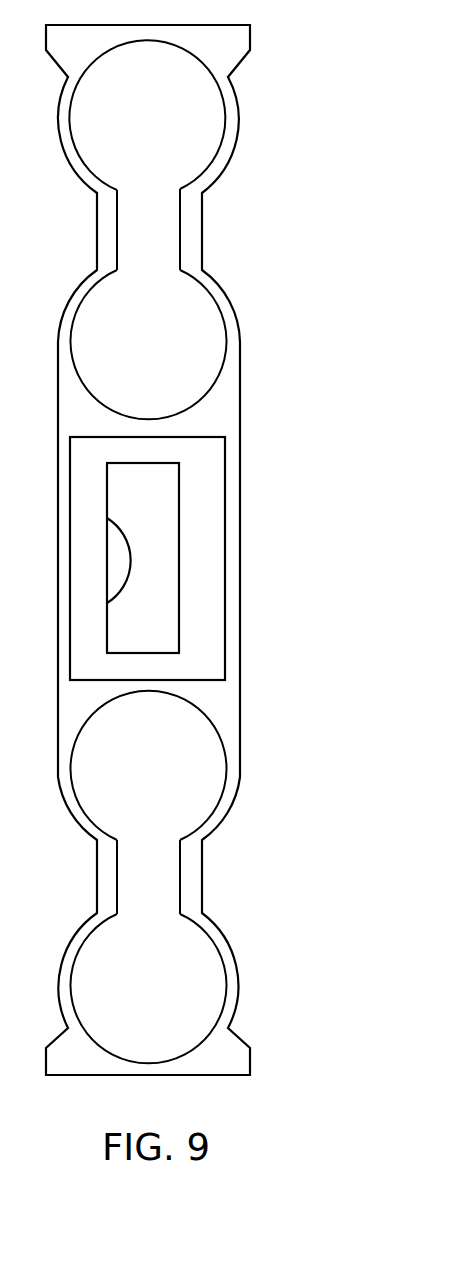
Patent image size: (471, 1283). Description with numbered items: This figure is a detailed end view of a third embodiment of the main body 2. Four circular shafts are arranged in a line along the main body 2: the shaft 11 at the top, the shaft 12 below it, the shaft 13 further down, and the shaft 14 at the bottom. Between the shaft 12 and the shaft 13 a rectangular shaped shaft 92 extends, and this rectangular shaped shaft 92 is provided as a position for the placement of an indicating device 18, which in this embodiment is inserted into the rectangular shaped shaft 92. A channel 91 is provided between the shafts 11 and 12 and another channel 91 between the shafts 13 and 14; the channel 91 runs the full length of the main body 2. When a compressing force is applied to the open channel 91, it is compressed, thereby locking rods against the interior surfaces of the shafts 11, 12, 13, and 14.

The main body 2 is at (250, 40).
The shaft 11 is at (170, 125).
The shaft 12 is at (163, 347).
The shaft 13 is at (180, 778).
The shaft 14 is at (190, 977).
The indicating device 18 is at (160, 537).
The channel 91 is at (152, 228).
The rectangular shaped shaft 92 is at (225, 627).